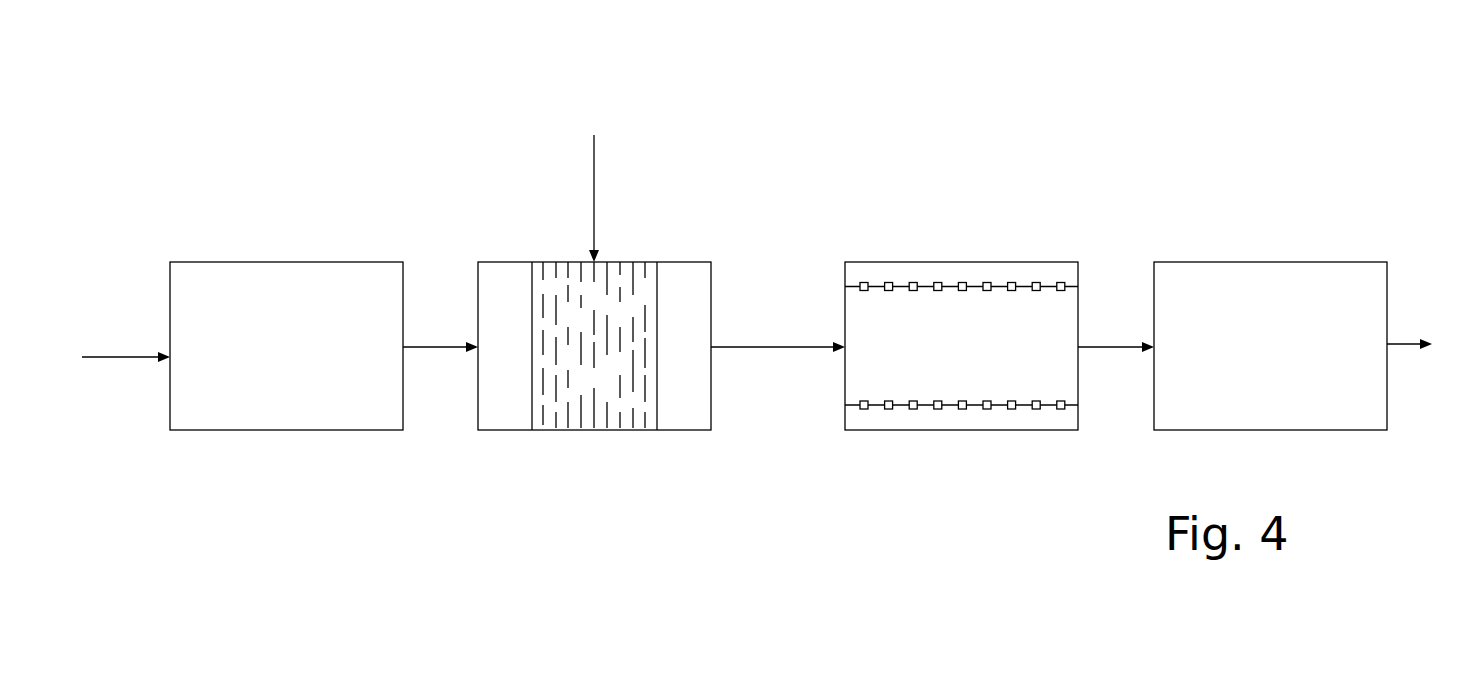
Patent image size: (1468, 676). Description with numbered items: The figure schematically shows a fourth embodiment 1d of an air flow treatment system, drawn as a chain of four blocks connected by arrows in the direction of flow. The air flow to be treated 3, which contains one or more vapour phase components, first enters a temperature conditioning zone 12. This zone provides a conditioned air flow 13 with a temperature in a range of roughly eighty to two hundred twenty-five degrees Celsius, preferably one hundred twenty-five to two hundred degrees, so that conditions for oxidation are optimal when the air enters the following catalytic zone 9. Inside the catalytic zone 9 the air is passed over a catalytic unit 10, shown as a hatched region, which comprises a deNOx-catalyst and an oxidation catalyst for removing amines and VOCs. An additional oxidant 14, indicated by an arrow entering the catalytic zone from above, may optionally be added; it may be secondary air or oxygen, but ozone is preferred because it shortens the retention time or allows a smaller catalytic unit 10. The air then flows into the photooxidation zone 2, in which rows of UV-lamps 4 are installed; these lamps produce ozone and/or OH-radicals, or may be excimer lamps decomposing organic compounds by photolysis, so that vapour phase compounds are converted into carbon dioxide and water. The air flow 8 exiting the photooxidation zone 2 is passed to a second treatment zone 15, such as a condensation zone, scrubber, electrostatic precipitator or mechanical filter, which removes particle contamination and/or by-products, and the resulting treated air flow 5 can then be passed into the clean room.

The fourth embodiment of the air flow treatment system 1d is at (799, 146).
The photooxidation zone 2 is at (870, 428).
The air flow to be treated 3 is at (107, 355).
The UV-lamps 4 is at (1010, 286).
The treated air flow 5 is at (1413, 337).
The electrolysed water line 8 is at (1097, 343).
The catalytic zone 9 is at (684, 268).
The catalytic unit 10 is at (594, 405).
The temperature conditioning zone 12 is at (348, 262).
The conditioned air flow 13 is at (427, 345).
The additional oxidant 14 is at (593, 184).
The second treatment zone 15 is at (1312, 431).